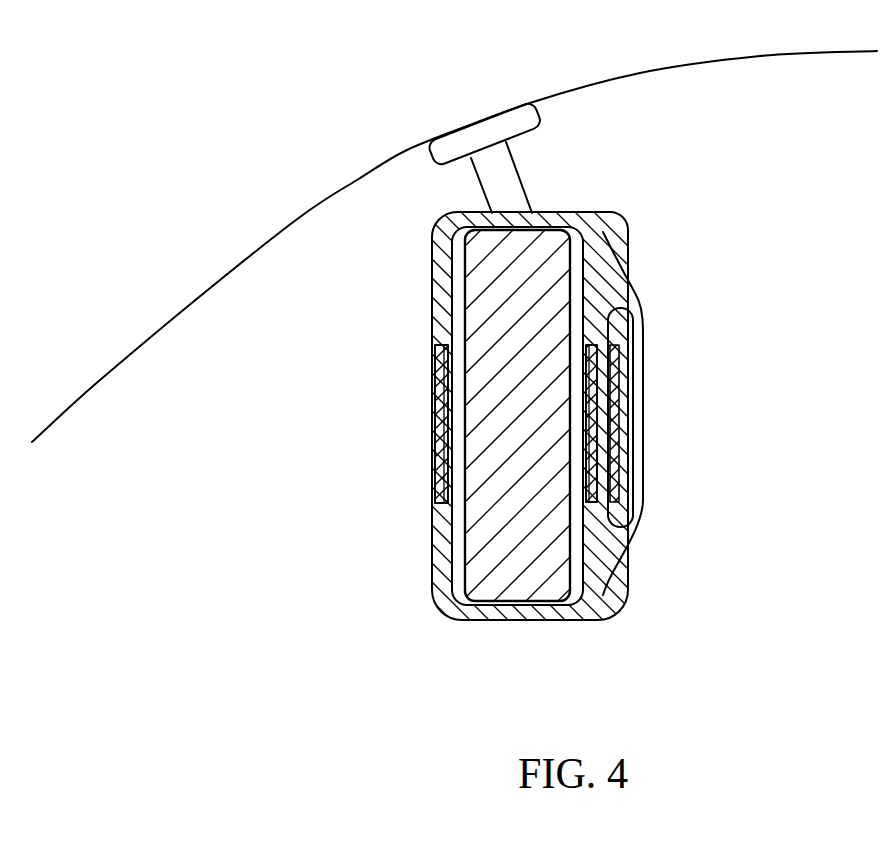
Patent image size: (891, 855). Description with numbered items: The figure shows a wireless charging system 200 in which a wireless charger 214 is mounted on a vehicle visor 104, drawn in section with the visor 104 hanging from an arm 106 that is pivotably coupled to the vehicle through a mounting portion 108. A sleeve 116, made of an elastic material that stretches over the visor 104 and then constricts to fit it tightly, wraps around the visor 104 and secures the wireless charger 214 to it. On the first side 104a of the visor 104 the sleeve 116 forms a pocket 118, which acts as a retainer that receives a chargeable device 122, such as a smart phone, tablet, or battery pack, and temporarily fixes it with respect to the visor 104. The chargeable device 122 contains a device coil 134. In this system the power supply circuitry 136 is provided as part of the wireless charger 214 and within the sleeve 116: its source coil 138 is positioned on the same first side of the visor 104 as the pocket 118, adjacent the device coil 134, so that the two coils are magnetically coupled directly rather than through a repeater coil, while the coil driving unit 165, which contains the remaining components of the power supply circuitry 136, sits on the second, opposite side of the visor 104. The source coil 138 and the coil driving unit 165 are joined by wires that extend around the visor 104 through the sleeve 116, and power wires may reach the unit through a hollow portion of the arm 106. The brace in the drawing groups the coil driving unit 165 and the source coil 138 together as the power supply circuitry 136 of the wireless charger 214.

The wireless charging system 200 is at (204, 181).
The mounting portion 108 is at (502, 118).
The arm 106 is at (523, 178).
The sleeve 116 is at (587, 607).
The pocket 118 is at (647, 439).
The chargeable device 122 is at (623, 355).
The device coil 134 is at (613, 385).
The visor 104 is at (552, 263).
The first side 104a is at (566, 560).
The power supply circuitry 136 is at (357, 360).
The wireless charger 214 is at (516, 424).
The coil driving unit 165 is at (434, 394).
The source coil 138 is at (595, 465).